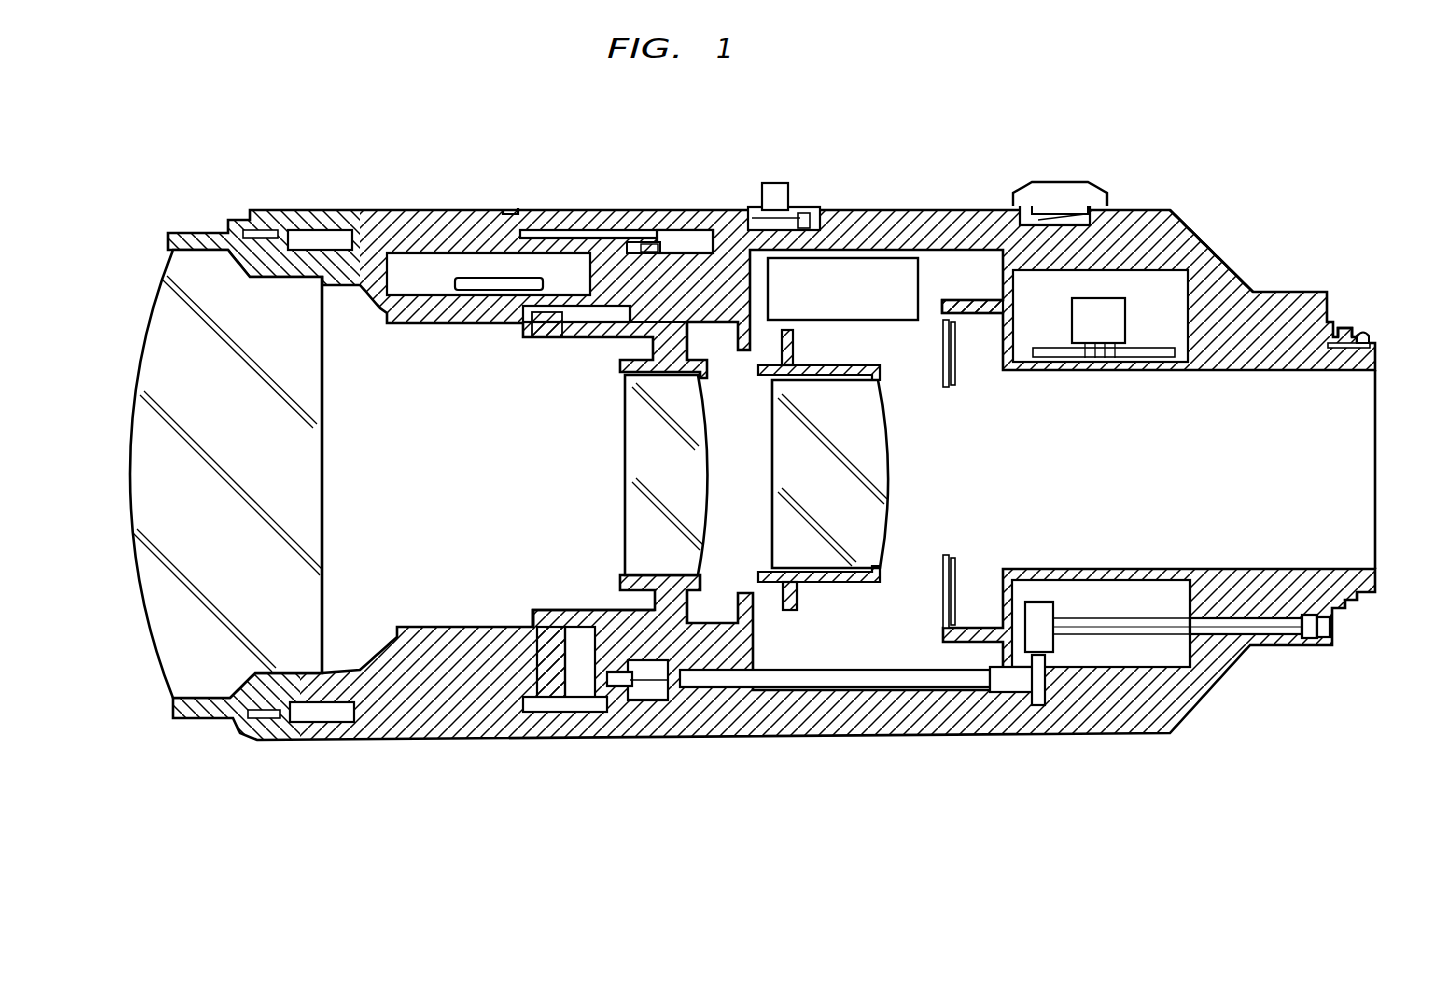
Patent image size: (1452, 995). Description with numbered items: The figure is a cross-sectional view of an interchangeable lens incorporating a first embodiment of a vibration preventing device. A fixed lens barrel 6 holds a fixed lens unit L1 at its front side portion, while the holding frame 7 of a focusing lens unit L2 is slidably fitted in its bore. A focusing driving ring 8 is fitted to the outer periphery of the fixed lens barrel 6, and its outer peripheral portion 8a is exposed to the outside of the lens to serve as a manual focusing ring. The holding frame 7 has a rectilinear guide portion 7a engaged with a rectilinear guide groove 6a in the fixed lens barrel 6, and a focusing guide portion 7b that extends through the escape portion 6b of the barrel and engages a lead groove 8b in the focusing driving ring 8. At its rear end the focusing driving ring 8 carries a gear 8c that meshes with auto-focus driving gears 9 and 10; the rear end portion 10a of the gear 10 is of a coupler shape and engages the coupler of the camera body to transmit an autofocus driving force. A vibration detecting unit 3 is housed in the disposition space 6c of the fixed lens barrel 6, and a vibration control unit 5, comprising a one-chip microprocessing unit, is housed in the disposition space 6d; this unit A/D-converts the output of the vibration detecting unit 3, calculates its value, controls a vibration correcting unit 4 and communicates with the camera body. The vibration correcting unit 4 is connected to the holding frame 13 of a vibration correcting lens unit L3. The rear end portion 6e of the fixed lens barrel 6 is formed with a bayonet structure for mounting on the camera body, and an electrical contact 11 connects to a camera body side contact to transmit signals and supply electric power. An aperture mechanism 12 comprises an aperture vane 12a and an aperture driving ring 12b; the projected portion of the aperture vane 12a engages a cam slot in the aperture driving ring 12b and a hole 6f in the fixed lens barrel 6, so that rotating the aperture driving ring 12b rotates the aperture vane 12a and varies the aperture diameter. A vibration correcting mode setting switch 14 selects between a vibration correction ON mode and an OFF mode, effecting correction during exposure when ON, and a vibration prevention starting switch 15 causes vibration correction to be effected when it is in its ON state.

The vibration detecting unit 3 is at (1107, 297).
The vibration correcting unit 4 is at (850, 270).
The vibration control unit 5 is at (478, 283).
The fixed lens barrel 6 is at (905, 227).
The rectilinear guide groove 6a is at (590, 312).
The escape portion 6b is at (518, 630).
The disposition space 6c is at (1170, 288).
The disposition space 6d is at (400, 232).
The rear end portion 6e is at (1346, 327).
The hole 6f is at (945, 358).
The holding frame 7 is at (673, 318).
The rectilinear guide portion 7a is at (530, 328).
The focusing guide portion 7b is at (538, 672).
The focusing driving ring 8 is at (577, 232).
The outer peripheral portion 8a is at (433, 217).
The lead groove 8b is at (577, 705).
The gear 8c is at (653, 703).
The auto-focus driving gear 9 is at (860, 668).
The auto-focus driving gear 10 is at (1150, 632).
The rear end portion 10a is at (1322, 646).
The electrical contact 11 is at (1369, 335).
The aperture mechanism 12 is at (976, 474).
The aperture vane 12a is at (945, 388).
The aperture driving ring 12b is at (955, 387).
The holding frame 13 is at (800, 596).
The vibration correcting mode setting switch 14 is at (1062, 190).
The vibration prevention starting switch 15 is at (776, 195).
The fixed lens unit L1 is at (302, 465).
The focusing lens unit L2 is at (633, 450).
The vibration correcting lens unit L3 is at (880, 490).